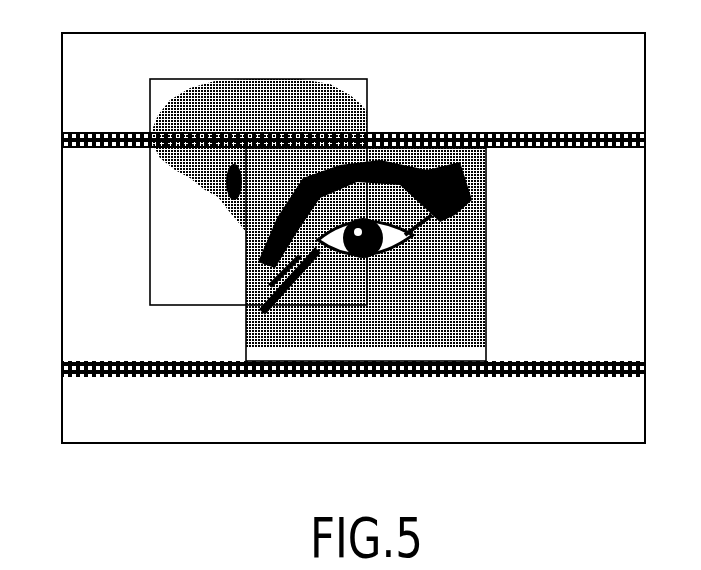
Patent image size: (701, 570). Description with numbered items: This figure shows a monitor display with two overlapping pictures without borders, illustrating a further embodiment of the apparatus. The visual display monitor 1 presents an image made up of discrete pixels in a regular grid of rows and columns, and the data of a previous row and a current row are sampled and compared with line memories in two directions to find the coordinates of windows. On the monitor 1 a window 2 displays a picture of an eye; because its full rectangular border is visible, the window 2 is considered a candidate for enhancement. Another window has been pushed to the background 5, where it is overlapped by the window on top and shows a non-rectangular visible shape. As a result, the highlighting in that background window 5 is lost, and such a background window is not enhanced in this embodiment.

The visual display monitor 1 is at (62, 87).
The window 2 is at (244, 332).
The background window 5 is at (370, 94).